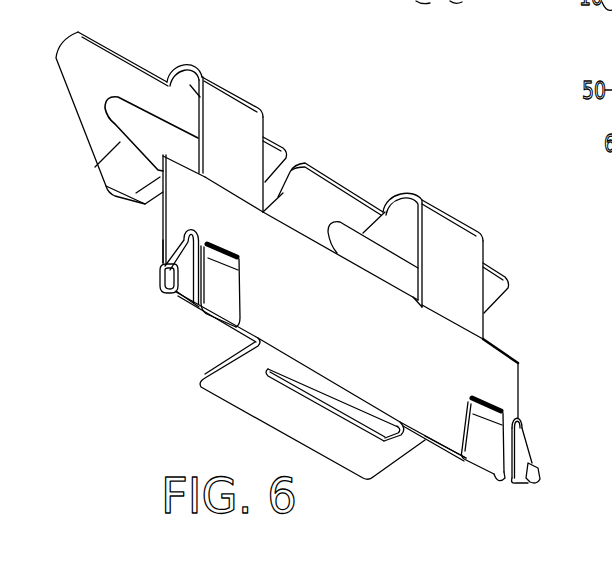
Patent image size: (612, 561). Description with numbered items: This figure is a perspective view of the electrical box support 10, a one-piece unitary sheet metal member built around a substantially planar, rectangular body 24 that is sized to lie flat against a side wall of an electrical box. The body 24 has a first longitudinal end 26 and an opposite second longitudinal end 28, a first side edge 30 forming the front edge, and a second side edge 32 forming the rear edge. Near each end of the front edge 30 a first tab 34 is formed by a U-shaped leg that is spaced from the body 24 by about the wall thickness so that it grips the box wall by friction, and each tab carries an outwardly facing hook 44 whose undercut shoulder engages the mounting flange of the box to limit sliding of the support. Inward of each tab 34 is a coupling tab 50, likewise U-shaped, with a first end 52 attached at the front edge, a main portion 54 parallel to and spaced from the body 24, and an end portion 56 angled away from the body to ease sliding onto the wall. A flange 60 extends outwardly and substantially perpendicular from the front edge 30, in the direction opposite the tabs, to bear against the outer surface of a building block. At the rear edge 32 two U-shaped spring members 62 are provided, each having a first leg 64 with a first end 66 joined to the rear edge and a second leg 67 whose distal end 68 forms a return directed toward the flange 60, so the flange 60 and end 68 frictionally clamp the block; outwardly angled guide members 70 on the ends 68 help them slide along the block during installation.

The electrical box support 10 is at (462, 207).
The body 24 is at (313, 327).
The first longitudinal end 26 is at (160, 244).
The second longitudinal end 28 is at (520, 378).
The first side edge 30 is at (439, 450).
The second side edge 32 is at (498, 350).
The first tab 34 is at (193, 230).
The hook 44 is at (160, 275).
The coupling tab 50 is at (252, 261).
The first end 52 is at (200, 303).
The main portion 54 is at (228, 287).
The end portion 56 is at (225, 258).
The flange 60 is at (318, 432).
The spring member 62 is at (214, 71).
The first leg 64 is at (252, 128).
The first end 66 is at (279, 198).
The second leg 67 is at (178, 108).
The distal end 68 is at (112, 187).
The guide member 70 is at (76, 57).